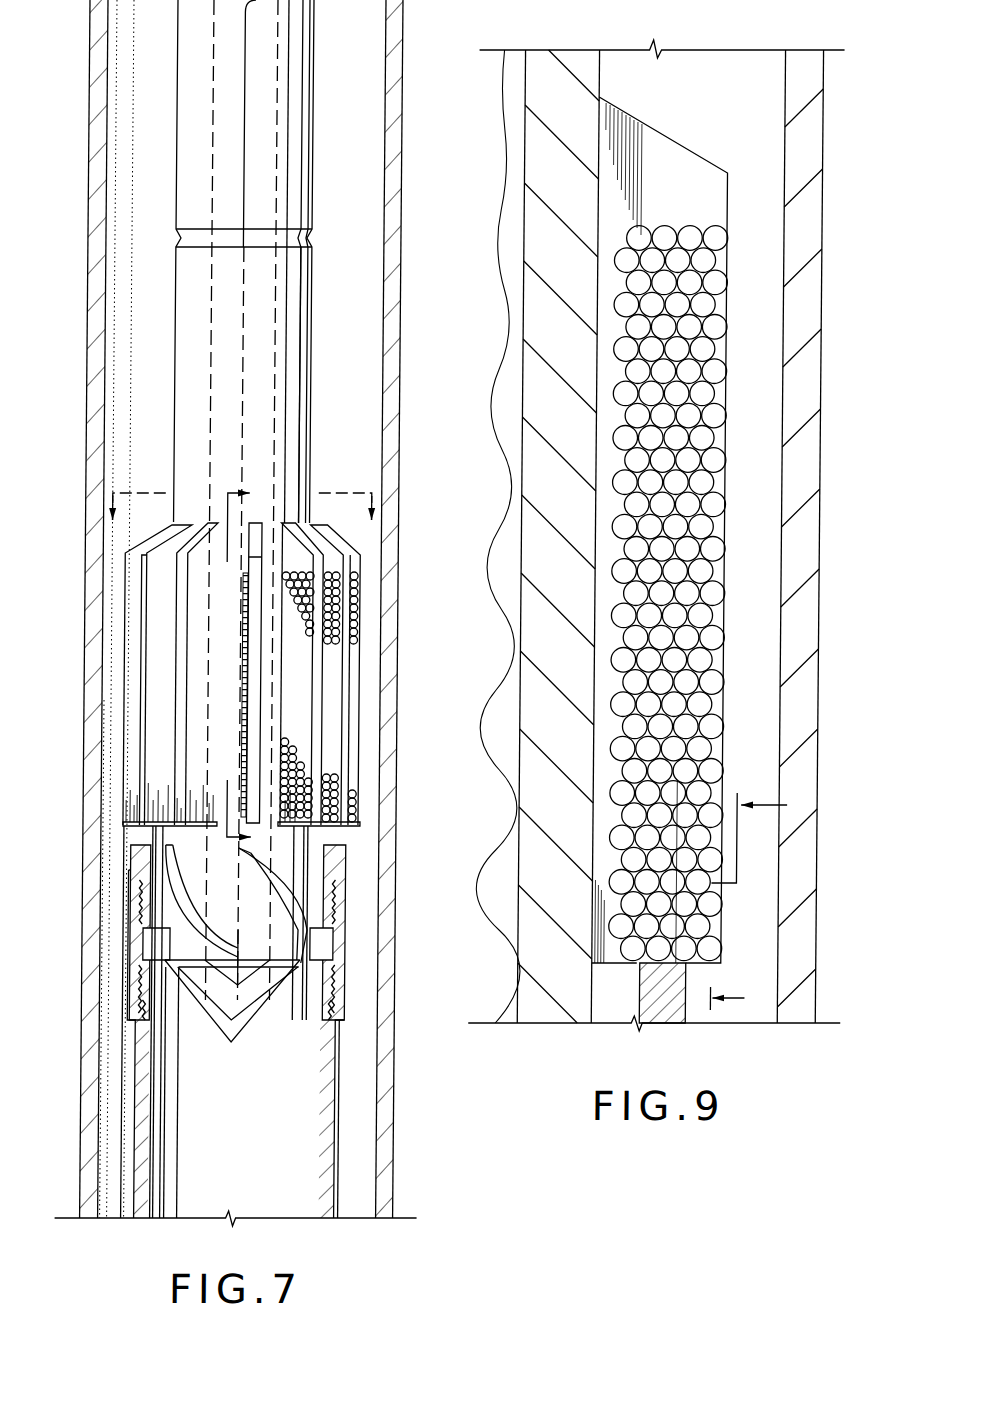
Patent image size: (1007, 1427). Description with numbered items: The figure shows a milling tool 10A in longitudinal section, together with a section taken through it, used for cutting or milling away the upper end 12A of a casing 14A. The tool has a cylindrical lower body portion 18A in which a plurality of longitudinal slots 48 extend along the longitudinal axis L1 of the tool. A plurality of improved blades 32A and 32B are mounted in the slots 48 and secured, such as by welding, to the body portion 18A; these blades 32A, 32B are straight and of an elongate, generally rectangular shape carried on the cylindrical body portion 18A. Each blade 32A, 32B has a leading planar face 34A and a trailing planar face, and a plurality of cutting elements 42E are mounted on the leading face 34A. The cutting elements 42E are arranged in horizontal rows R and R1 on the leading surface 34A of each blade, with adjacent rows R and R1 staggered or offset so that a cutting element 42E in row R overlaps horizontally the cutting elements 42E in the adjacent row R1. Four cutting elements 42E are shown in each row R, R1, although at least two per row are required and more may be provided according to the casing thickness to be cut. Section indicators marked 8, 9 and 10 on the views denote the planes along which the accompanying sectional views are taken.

In FIG. 7, the casing 14A is at (345, 1137).
In FIG. 9, the casing 14A is at (682, 1013).
In FIG. 7, the milling tool 10A is at (319, 280).
In FIG. 7, the longitudinal axis L1 is at (247, 102).
In FIG. 7, the cylindrical lower body portion 18A is at (322, 478).
In FIG. 9, the cylindrical lower body portion 18A is at (603, 377).
In FIG. 7, the section line 8- 8 is at (242, 524).
In FIG. 7, the section line 9- 9 is at (250, 668).
In FIG. 7, the longitudinal slots 48 is at (222, 548).
In FIG. 7, the blade 32B is at (203, 605).
In FIG. 7, the blade 32A is at (163, 715).
In FIG. 9, the blade 32A is at (684, 138).
In FIG. 7, the upper end of casing 12A is at (154, 826).
In FIG. 9, the upper end of casing 12A is at (681, 933).
In FIG. 9, the leading planar face 34A is at (705, 203).
In FIG. 9, the cutting elements 42E is at (704, 572).
In FIG. 9, the section line 10- 10 is at (763, 902).
In FIG. 9, the row of cutting elements R1 is at (616, 886).
In FIG. 9, the row of cutting elements R is at (631, 907).